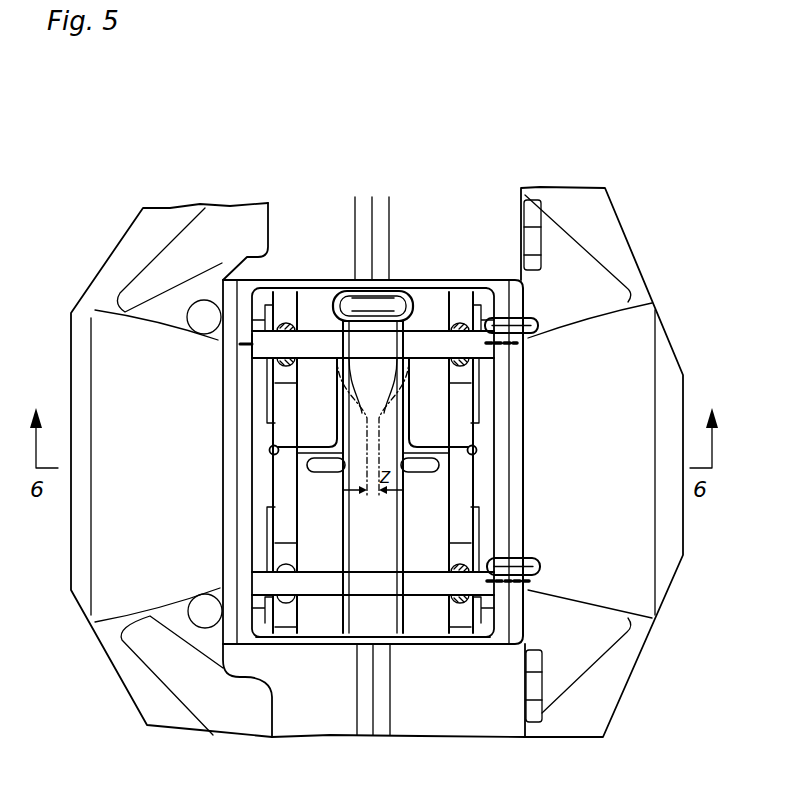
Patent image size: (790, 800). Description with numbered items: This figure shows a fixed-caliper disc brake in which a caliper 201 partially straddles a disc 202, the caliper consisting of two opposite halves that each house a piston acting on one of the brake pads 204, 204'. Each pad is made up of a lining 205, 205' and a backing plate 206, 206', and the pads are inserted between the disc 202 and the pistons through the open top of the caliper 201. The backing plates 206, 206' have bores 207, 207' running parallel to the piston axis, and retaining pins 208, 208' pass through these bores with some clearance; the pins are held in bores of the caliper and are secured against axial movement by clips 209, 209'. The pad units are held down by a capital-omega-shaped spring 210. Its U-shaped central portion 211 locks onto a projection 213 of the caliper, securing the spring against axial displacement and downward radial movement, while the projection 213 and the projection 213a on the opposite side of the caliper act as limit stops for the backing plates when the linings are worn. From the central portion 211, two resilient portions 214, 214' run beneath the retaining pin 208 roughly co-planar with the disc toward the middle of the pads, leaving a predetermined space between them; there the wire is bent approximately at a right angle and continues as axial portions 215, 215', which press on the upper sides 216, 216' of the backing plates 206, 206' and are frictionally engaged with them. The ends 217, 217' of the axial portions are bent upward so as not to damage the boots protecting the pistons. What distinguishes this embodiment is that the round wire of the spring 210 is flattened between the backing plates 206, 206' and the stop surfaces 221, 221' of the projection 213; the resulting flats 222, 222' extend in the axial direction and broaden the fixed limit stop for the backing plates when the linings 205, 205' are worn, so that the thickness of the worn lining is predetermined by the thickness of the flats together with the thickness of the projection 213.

The caliper 201 is at (171, 230).
The disc 202 is at (401, 317).
The pad 204 is at (299, 671).
The pad 204' is at (451, 662).
The lining 205 is at (232, 462).
The lining 205' is at (507, 462).
The backing plate 206 is at (233, 462).
The backing plate 206' is at (513, 462).
The bore 207 is at (223, 463).
The bore 207' is at (516, 479).
The retaining pin 208 is at (193, 353).
The retaining pin 208' is at (417, 583).
The clip 209 is at (527, 311).
The clip 209' is at (535, 554).
The spring 210 is at (329, 300).
The U-shaped central portion 211 is at (392, 287).
The projection 213 is at (360, 284).
The bolt 213a is at (382, 633).
The resilient portion 214 is at (322, 427).
The resilient portion 214' is at (423, 427).
The axial portion 215 is at (321, 484).
The axial portion 215' is at (425, 485).
The upper side of backing plate 216 is at (213, 464).
The upper side of backing plate 216' is at (514, 464).
The end of axial portion 217 is at (217, 473).
The end of axial portion 217' is at (519, 428).
The stop surface 221 is at (347, 315).
The stop surface 221' is at (373, 476).
The flat 222 is at (373, 344).
The flat 222' is at (452, 266).